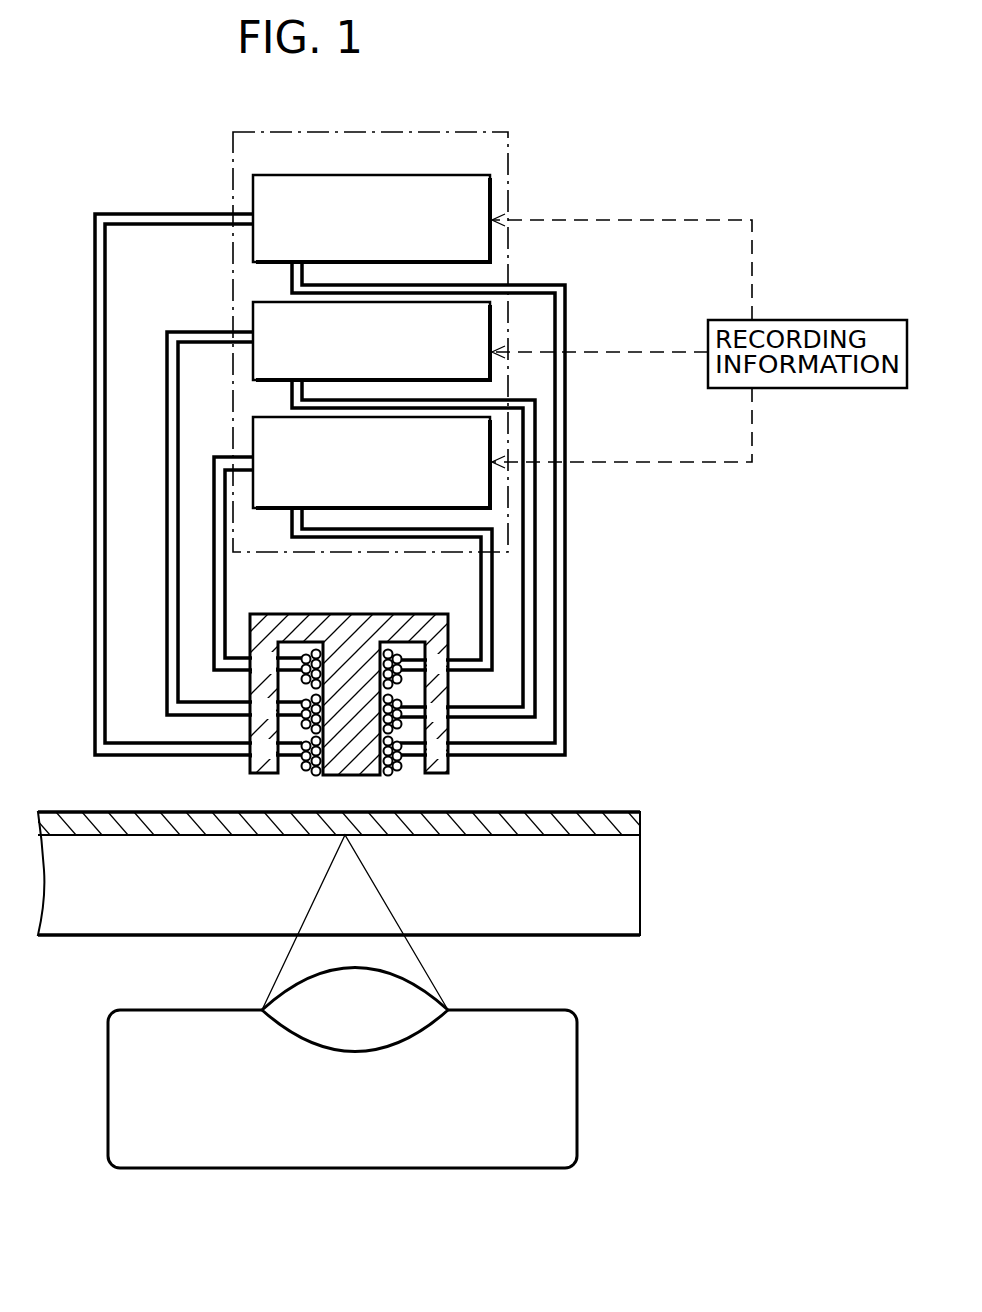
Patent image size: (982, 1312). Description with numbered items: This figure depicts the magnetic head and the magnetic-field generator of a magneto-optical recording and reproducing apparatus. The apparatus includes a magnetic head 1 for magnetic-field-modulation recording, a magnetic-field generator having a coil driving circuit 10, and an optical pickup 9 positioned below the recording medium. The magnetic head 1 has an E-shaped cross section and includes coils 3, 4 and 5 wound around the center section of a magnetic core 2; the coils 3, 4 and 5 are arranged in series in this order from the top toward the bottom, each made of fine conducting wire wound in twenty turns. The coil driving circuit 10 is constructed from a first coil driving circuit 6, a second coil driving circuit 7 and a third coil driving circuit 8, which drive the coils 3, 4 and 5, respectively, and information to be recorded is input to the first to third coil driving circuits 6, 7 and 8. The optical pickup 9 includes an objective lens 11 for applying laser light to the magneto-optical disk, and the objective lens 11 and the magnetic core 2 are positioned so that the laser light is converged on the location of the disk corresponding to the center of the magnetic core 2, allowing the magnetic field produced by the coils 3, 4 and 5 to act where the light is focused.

The magnetic head 1 is at (401, 644).
The magnetic core 2 is at (377, 772).
The coil 3 is at (313, 657).
The coil 4 is at (300, 703).
The coil 5 is at (310, 770).
The first coil driving circuit 6 is at (493, 438).
The second coil driving circuit 7 is at (492, 325).
The third coil driving circuit 8 is at (493, 198).
The optical pickup 9 is at (580, 1063).
The coil driving circuit 10 is at (486, 129).
The objective lens 11 is at (412, 1005).